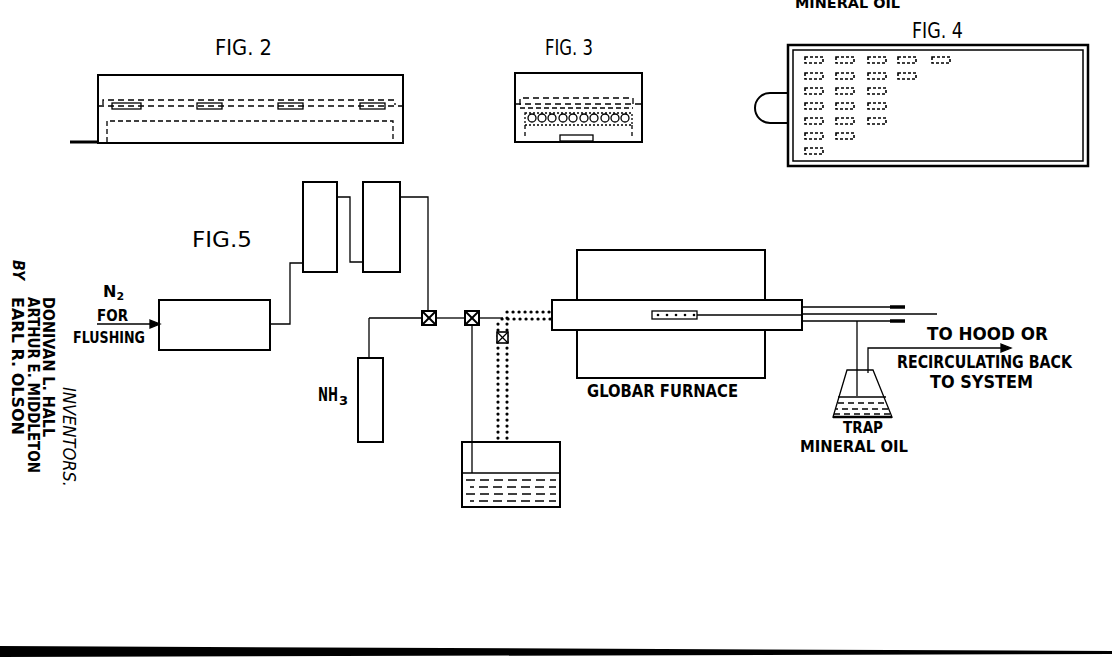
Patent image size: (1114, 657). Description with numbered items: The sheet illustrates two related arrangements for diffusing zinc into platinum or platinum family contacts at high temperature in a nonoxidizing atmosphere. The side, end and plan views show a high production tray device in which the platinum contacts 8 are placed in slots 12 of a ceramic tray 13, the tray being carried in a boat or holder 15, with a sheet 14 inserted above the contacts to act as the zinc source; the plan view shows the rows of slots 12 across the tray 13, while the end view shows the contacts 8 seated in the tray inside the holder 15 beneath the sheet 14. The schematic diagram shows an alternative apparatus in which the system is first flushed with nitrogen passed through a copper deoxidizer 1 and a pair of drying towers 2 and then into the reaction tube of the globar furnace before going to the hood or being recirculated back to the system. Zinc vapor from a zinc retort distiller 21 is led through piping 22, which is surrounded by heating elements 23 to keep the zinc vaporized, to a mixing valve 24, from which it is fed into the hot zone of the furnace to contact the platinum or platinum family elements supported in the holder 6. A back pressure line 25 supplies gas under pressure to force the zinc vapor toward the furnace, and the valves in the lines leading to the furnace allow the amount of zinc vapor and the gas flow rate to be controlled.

In FIG. 5, the copper deoxidizer 1 is at (236, 306).
In FIG. 5, the drying towers 2 is at (362, 190).
In FIG. 5, the holder 6 is at (672, 311).
In FIG. 3, the platinum contacts 8 is at (568, 149).
In FIG. 2, the slots 12 is at (213, 123).
In FIG. 3, the slots 12 is at (636, 107).
In FIG. 2, the ceramic tray 13 is at (403, 124).
In FIG. 3, the ceramic tray 13 is at (525, 133).
In FIG. 4, the ceramic tray 13 is at (848, 162).
In FIG. 2, the sheet 14 is at (368, 100).
In FIG. 3, the sheet 14 is at (615, 100).
In FIG. 2, the boat or holder 15 is at (98, 89).
In FIG. 3, the boat or holder 15 is at (515, 90).
In FIG. 4, the boat or holder 15 is at (788, 62).
In FIG. 5, the zinc retort distiller 21 is at (556, 443).
In FIG. 5, the piping 22 is at (507, 404).
In FIG. 5, the heating elements 23 is at (498, 384).
In FIG. 5, the mixing valve 24 is at (477, 311).
In FIG. 5, the back pressure line 25 is at (432, 311).